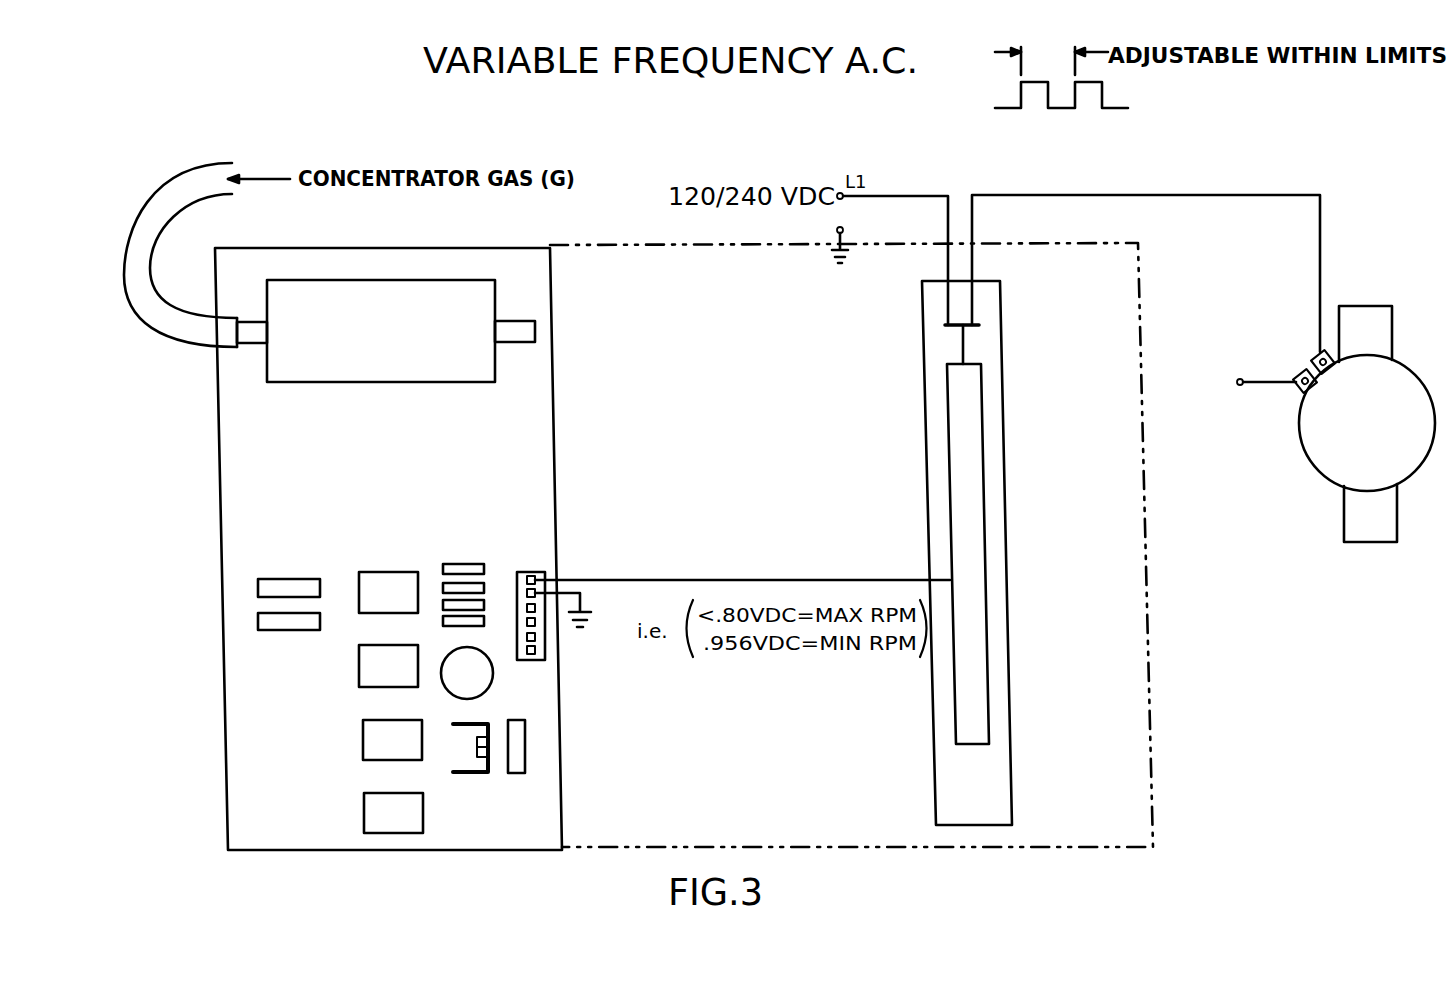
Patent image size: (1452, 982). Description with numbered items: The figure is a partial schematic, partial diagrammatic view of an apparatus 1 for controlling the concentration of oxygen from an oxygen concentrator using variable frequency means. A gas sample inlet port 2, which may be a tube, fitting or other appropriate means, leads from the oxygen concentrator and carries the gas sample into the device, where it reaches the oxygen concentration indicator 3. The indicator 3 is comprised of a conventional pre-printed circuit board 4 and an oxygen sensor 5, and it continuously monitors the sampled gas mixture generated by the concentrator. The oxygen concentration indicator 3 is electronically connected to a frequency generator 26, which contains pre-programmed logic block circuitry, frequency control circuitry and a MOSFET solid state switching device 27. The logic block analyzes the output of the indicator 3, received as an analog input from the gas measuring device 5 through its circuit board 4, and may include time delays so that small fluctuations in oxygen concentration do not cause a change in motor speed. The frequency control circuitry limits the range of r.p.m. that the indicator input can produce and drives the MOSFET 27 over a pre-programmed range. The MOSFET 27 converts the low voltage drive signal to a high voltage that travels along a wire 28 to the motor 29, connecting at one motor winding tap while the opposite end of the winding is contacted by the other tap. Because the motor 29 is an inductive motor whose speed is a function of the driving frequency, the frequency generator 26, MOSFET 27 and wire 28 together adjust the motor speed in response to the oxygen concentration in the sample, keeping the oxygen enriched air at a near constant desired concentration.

The apparatus for controlling the concentration of oxygen 1 is at (643, 245).
The gas sample inlet port 2 is at (165, 222).
The oxygen concentration indicator 3 is at (552, 388).
The pre-printed circuit board 4 is at (518, 482).
The oxygen sensor 5 is at (461, 331).
The frequency generator 26 is at (991, 789).
The MOSFET solid state switching device 27 is at (975, 318).
The wire 28 is at (1322, 219).
The motor 29 is at (1397, 362).